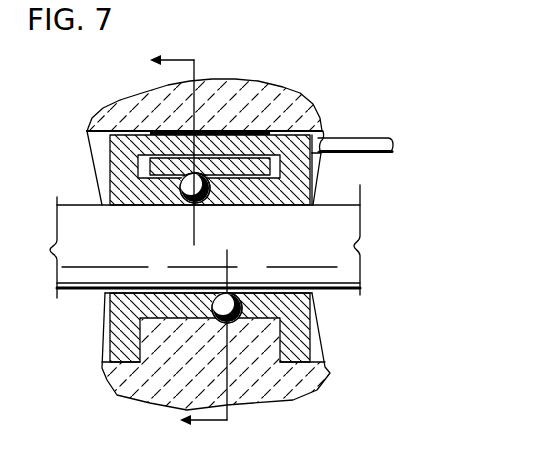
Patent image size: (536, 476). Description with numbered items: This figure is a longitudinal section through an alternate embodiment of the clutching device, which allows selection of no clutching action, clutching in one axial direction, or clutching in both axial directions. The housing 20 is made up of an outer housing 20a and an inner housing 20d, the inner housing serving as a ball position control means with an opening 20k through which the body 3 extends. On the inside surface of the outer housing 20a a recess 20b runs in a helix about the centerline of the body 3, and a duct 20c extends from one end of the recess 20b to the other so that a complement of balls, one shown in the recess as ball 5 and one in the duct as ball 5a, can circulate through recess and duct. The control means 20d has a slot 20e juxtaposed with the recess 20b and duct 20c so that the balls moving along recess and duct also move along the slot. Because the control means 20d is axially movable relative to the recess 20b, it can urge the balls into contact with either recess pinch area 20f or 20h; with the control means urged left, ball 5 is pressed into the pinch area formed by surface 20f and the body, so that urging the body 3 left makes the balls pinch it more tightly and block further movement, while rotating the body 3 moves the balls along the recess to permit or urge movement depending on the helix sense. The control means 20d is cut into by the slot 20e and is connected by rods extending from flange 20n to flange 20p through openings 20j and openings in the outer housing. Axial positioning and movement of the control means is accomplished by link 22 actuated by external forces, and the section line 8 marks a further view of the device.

The body 3 is at (323, 248).
The ball 5 is at (191, 196).
The ball 5a is at (215, 321).
The section line 8- 8 is at (176, 240).
The housing 20 is at (72, 116).
The outer housing 20a is at (290, 95).
The recess 20b is at (197, 172).
The duct 20c is at (237, 321).
The inner housing 20d is at (319, 131).
The slot 20e is at (226, 198).
The recess pinch area 20f is at (165, 163).
The recess pinch area 20h is at (205, 172).
The openings 20j is at (327, 374).
The opening 20k is at (305, 193).
The flange 20n is at (312, 335).
The flange 20p is at (110, 335).
The link 22 is at (351, 140).